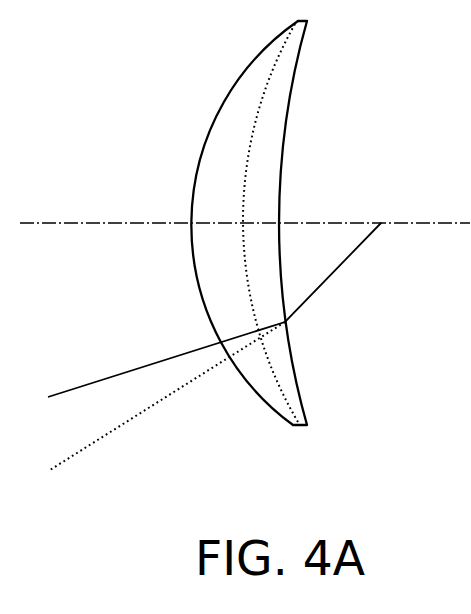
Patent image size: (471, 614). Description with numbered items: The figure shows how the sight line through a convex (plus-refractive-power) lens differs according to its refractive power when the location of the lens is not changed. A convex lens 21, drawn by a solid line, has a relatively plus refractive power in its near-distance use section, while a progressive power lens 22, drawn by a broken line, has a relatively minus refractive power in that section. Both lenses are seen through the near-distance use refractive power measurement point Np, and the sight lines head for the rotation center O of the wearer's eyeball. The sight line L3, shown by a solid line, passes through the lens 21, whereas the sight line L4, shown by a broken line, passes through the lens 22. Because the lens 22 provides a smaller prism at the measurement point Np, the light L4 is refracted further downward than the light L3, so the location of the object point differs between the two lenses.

The convex lens 21 is at (305, 30).
The progressive power lens 22 is at (272, 78).
The rotation center of an eyeball O is at (381, 210).
The near-distance use refractive power measurement point Np is at (303, 322).
The sight line L3 is at (214, 310).
The sight line L4 is at (167, 401).